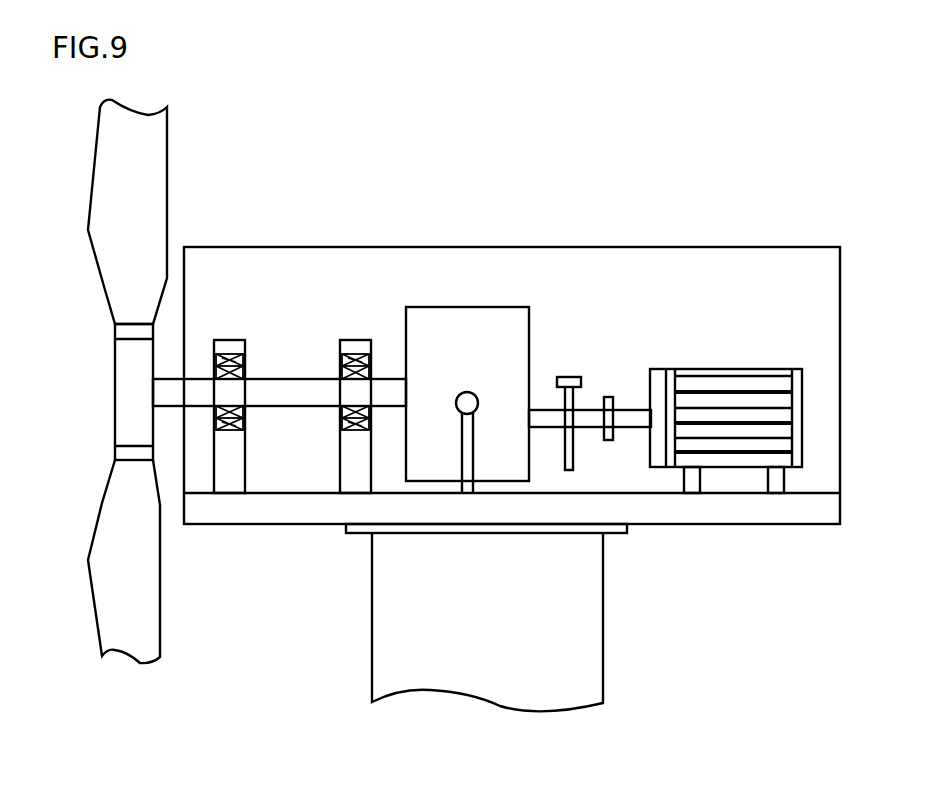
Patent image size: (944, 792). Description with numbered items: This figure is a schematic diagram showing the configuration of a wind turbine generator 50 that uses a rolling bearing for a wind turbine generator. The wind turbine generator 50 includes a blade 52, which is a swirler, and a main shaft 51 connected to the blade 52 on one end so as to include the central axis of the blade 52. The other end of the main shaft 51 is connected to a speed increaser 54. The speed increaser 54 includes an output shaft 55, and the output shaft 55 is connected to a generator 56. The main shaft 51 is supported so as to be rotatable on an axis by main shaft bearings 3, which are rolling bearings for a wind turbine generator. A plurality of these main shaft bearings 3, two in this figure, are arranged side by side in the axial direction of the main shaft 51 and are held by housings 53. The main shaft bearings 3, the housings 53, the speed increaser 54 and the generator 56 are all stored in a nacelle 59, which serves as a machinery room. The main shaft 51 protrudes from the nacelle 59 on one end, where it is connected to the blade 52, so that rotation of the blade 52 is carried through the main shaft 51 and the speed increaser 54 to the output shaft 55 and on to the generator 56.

The wind turbine generator 50 is at (819, 212).
The blade 52 is at (115, 175).
The housing 53 is at (230, 348).
The main shaft bearing 3 is at (253, 350).
The main shaft 51 is at (282, 395).
The speed increaser 54 is at (484, 330).
The output shaft 55 is at (593, 412).
The nacelle 59 is at (643, 247).
The generator 56 is at (729, 384).